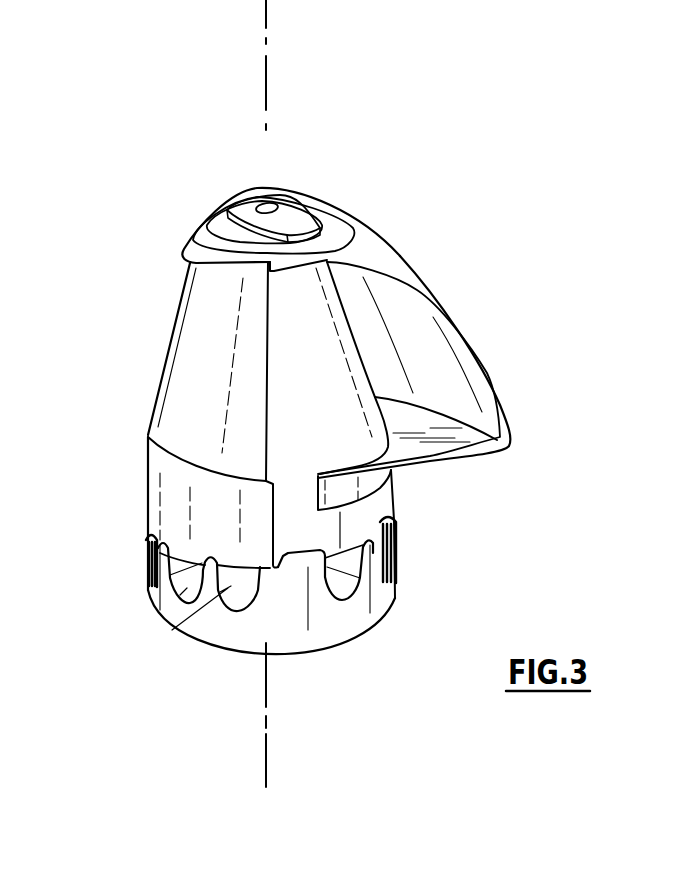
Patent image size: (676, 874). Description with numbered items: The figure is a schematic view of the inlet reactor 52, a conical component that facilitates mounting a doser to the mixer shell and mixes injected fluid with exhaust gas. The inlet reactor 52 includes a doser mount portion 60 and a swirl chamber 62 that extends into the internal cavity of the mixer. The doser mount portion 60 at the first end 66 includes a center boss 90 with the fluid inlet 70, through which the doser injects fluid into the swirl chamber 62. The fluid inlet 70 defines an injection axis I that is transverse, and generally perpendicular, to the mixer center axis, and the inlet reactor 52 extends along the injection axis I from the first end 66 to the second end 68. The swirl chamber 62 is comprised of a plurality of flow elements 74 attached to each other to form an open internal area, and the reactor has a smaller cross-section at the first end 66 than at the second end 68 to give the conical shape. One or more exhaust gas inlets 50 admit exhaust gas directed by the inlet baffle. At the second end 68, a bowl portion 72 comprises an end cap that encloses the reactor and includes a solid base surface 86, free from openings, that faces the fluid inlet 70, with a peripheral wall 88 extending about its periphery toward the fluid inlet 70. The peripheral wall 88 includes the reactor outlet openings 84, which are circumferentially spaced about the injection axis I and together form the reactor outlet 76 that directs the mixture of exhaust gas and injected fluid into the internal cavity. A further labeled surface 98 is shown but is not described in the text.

The injection axis I is at (266, 66).
The exhaust gas inlet 50 is at (432, 378).
The inlet reactor 52 is at (439, 309).
The doser mount portion 60 is at (285, 195).
The swirl chamber 62 is at (322, 390).
The first end 66 is at (202, 266).
The second end 68 is at (147, 533).
The fluid inlet 70 is at (274, 206).
The bowl portion 72 is at (250, 573).
The flow element 74 is at (146, 443).
The reactor outlet 76 is at (135, 578).
The reactor outlet opening 84 is at (185, 608).
The solid base surface 86 is at (395, 605).
The peripheral wall 88 is at (293, 613).
The center boss 90 is at (237, 210).
The deflector surface 98 is at (425, 427).